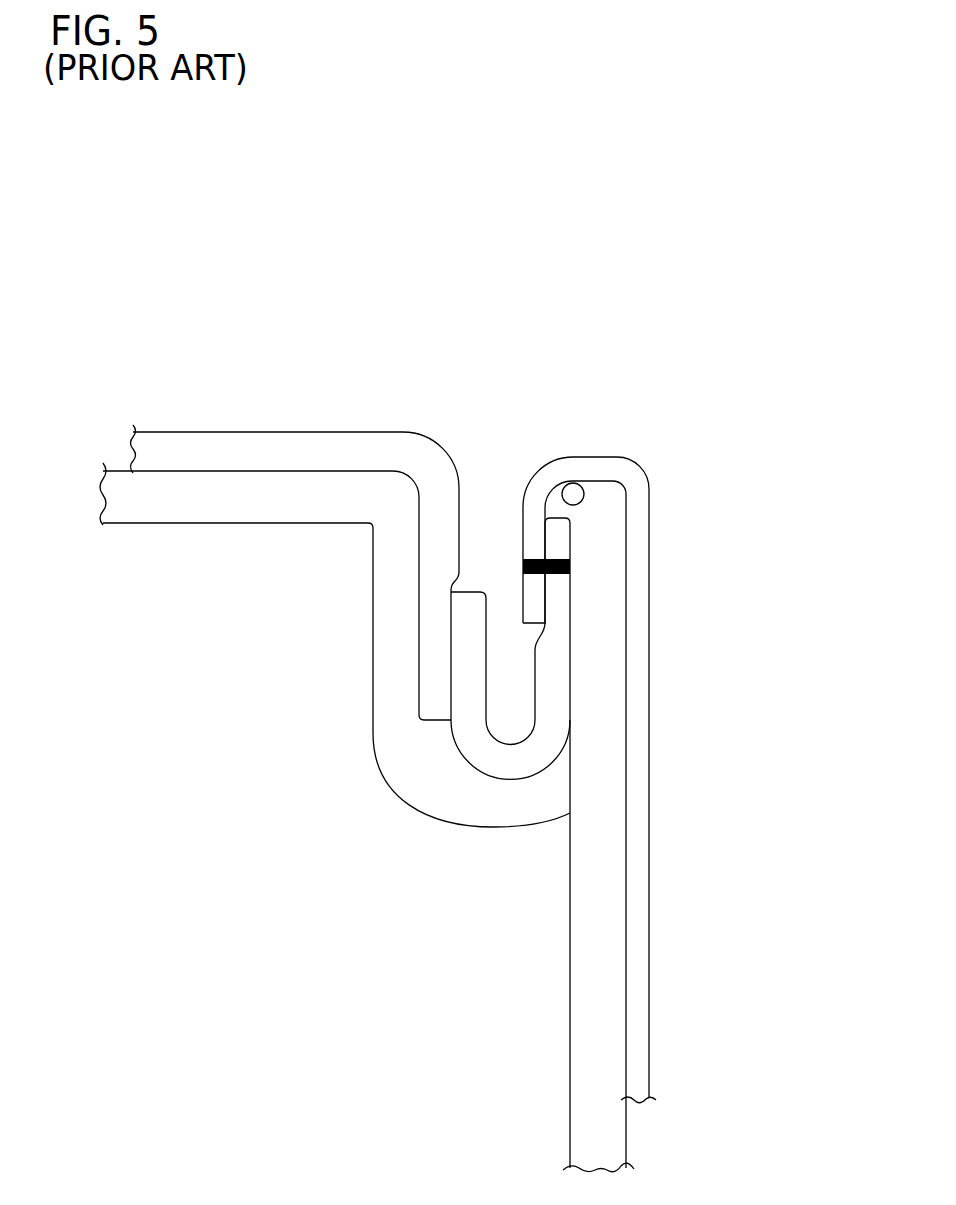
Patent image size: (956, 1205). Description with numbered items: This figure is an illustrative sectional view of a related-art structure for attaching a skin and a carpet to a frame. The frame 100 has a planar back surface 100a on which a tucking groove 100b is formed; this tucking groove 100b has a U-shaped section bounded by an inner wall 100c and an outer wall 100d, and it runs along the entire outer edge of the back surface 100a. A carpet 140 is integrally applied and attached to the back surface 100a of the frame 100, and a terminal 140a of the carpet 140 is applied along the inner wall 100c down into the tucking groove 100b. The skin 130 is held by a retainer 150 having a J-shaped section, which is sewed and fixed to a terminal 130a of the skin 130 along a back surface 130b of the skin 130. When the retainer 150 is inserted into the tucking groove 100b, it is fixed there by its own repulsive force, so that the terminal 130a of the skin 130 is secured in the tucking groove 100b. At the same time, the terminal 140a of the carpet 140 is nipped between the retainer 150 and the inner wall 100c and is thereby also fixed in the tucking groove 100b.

The frame 100 is at (177, 507).
The back surface 100a is at (263, 470).
The tucking groove 100b is at (440, 743).
The inner wall 100c is at (395, 715).
The outer wall 100d is at (603, 627).
The skin 130 is at (645, 907).
The terminal 130a is at (532, 532).
The back surface 130b is at (587, 495).
The carpet 140 is at (357, 440).
The terminal 140a is at (432, 596).
The retainer 150 is at (517, 760).